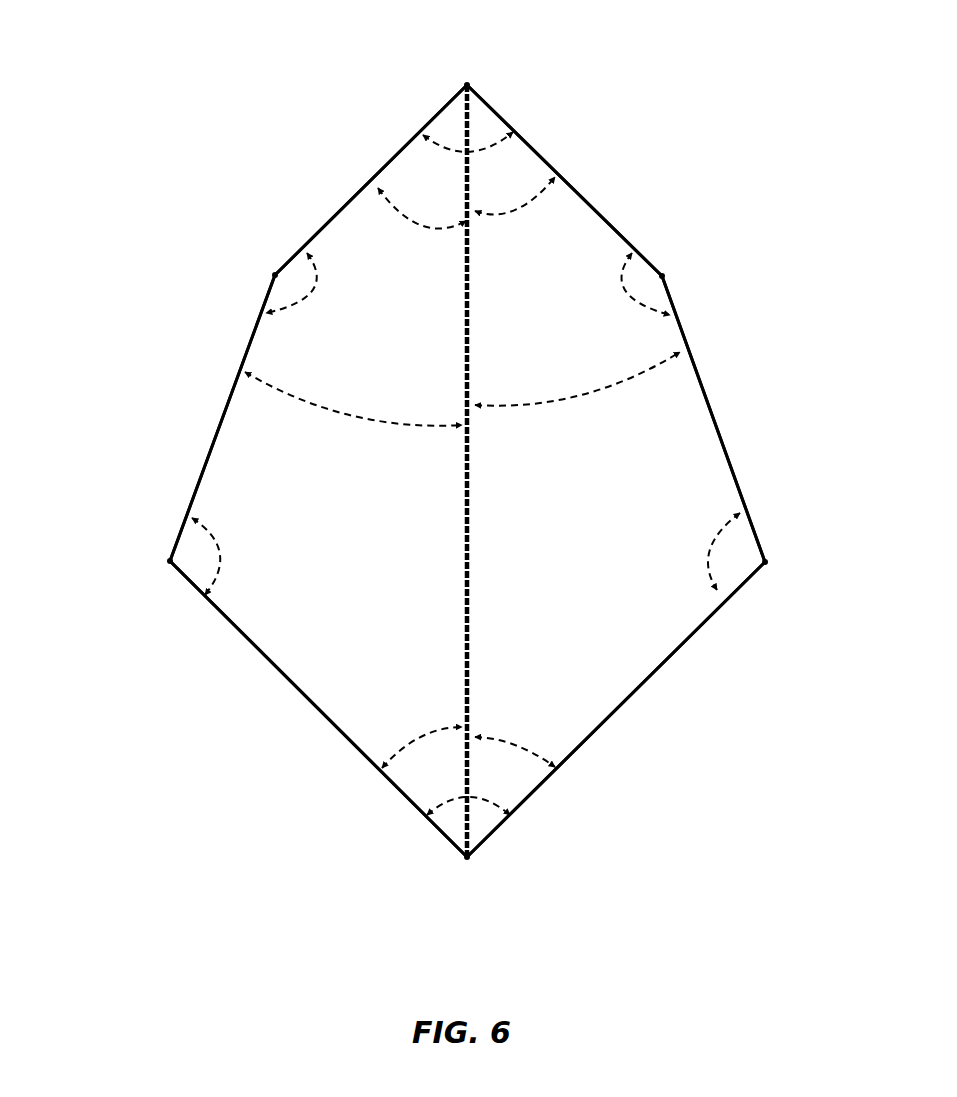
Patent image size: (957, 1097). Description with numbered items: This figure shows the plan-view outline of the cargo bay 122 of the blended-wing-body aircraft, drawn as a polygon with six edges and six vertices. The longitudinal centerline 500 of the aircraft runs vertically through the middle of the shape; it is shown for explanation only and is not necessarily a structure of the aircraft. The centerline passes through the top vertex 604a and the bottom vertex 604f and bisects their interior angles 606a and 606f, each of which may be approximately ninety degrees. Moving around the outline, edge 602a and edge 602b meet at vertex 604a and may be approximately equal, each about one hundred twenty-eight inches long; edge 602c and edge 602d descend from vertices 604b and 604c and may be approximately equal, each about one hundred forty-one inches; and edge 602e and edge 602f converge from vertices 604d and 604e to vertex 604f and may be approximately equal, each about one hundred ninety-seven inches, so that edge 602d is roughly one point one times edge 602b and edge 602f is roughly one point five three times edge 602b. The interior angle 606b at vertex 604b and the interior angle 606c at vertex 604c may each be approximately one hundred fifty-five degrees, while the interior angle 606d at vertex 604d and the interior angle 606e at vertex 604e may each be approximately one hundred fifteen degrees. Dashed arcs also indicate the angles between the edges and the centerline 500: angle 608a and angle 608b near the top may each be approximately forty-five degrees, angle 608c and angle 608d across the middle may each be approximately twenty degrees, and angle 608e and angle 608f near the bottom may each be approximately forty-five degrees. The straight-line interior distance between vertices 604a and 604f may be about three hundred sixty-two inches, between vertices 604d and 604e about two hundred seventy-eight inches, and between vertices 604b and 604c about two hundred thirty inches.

The cargo bay 122 is at (386, 606).
The longitudinal centerline 500 is at (478, 538).
The edge 602a is at (352, 200).
The edge 602b is at (595, 210).
The edge 602c is at (228, 397).
The edge 602d is at (693, 367).
The edge 602e is at (305, 696).
The edge 602f is at (632, 695).
The vertex 604a is at (467, 85).
The vertex 604b is at (275, 275).
The vertex 604c is at (664, 277).
The vertex 604d is at (170, 561).
The vertex 604e is at (765, 562).
The vertex 604f is at (467, 857).
The interior angle 606a is at (478, 149).
The interior angle 606b is at (314, 285).
The interior angle 606c is at (620, 284).
The interior angle 606d is at (236, 556).
The interior angle 606e is at (697, 551).
The interior angle 606f is at (485, 798).
The angle 608a is at (422, 213).
The angle 608b is at (515, 203).
The angle 608c is at (353, 406).
The angle 608d is at (577, 385).
The angle 608e is at (422, 739).
The angle 608f is at (515, 739).